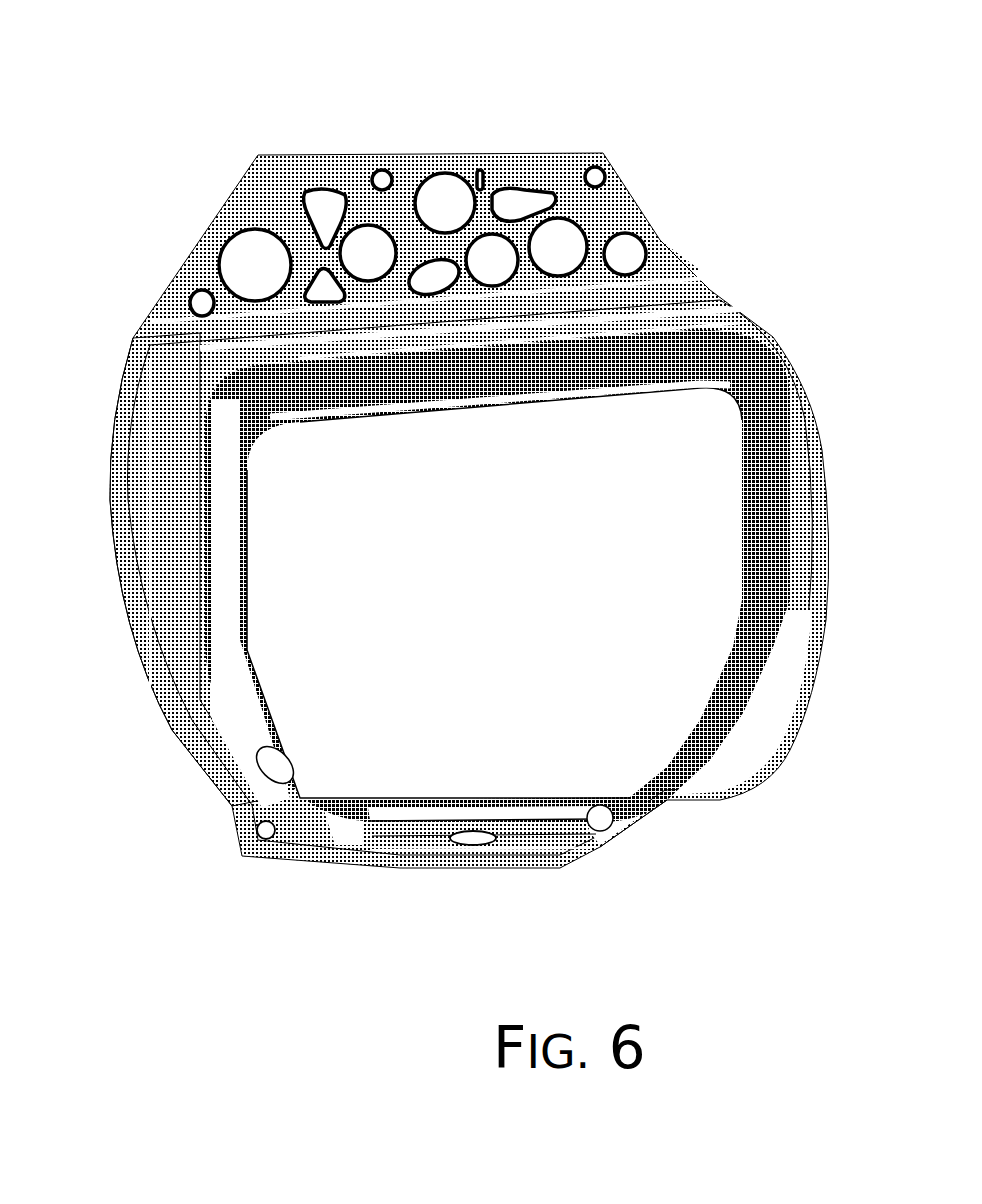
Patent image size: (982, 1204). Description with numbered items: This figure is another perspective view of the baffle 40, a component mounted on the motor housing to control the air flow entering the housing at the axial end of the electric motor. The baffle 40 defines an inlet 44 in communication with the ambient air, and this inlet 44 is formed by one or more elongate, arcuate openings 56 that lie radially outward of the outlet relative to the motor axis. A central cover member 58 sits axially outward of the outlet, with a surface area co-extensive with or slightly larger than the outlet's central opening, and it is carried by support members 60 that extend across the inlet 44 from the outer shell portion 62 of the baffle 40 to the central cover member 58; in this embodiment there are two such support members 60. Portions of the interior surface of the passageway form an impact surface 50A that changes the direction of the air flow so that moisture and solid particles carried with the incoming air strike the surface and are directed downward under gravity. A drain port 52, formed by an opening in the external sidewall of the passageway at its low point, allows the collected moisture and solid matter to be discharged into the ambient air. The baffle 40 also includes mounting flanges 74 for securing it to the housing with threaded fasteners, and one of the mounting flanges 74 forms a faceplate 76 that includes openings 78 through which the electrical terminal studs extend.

The baffle 40 is at (258, 38).
The inlet 44 is at (197, 478).
The impact surface 50A is at (220, 412).
The drain port 52 is at (470, 845).
The arcuate openings 56 is at (770, 418).
The central cover member 58 is at (670, 543).
The support members 60 is at (345, 788).
The outer shell portion 62 is at (150, 625).
The mounting flanges 74 is at (198, 277).
The faceplate 76 is at (642, 210).
The openings 78 is at (373, 237).